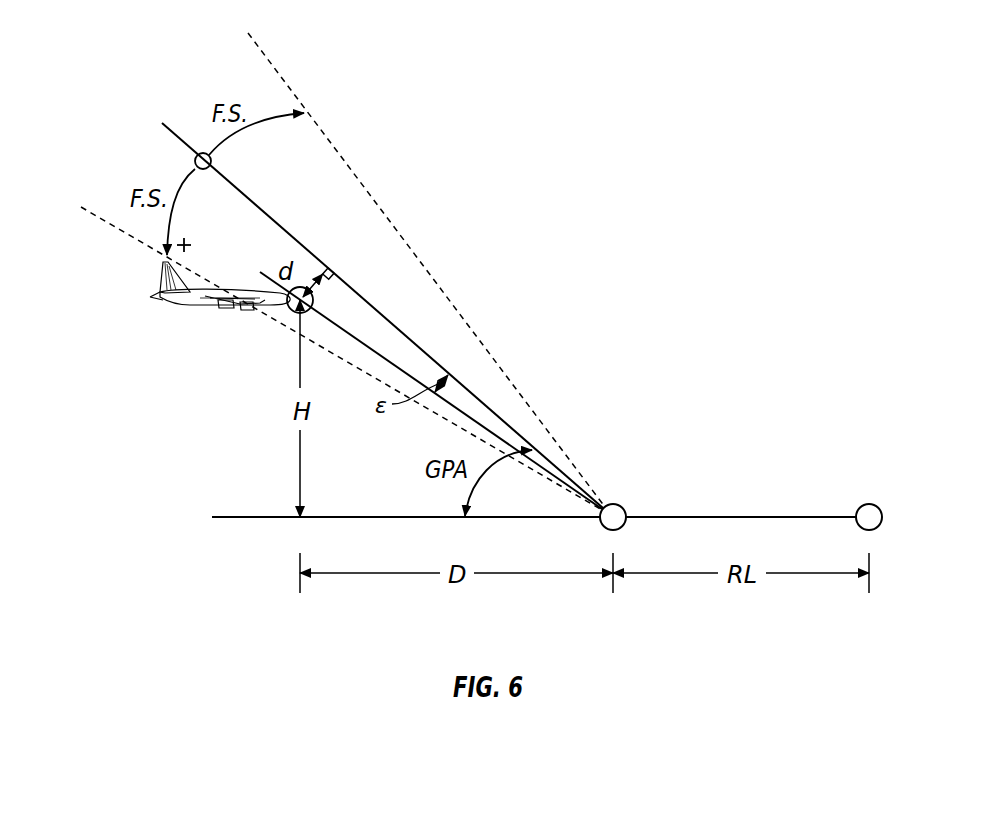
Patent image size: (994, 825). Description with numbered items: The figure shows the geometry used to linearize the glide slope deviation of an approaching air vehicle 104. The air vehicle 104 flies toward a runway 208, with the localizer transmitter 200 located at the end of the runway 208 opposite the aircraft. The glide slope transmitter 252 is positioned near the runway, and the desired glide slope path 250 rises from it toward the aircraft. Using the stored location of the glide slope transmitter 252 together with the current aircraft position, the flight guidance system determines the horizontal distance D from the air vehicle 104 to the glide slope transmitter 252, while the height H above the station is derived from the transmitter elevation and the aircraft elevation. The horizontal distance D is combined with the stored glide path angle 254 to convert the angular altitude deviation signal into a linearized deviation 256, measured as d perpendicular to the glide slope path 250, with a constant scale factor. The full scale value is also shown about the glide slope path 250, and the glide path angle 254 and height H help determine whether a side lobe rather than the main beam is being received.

The air vehicle 104 is at (212, 312).
The localizer transmitter 200 is at (872, 504).
The runway 208 is at (733, 517).
The glide slope path 250 is at (400, 332).
The glide slope transmitter 252 is at (614, 503).
The glide path angle 254 is at (517, 490).
The linearized deviation 256 is at (326, 266).